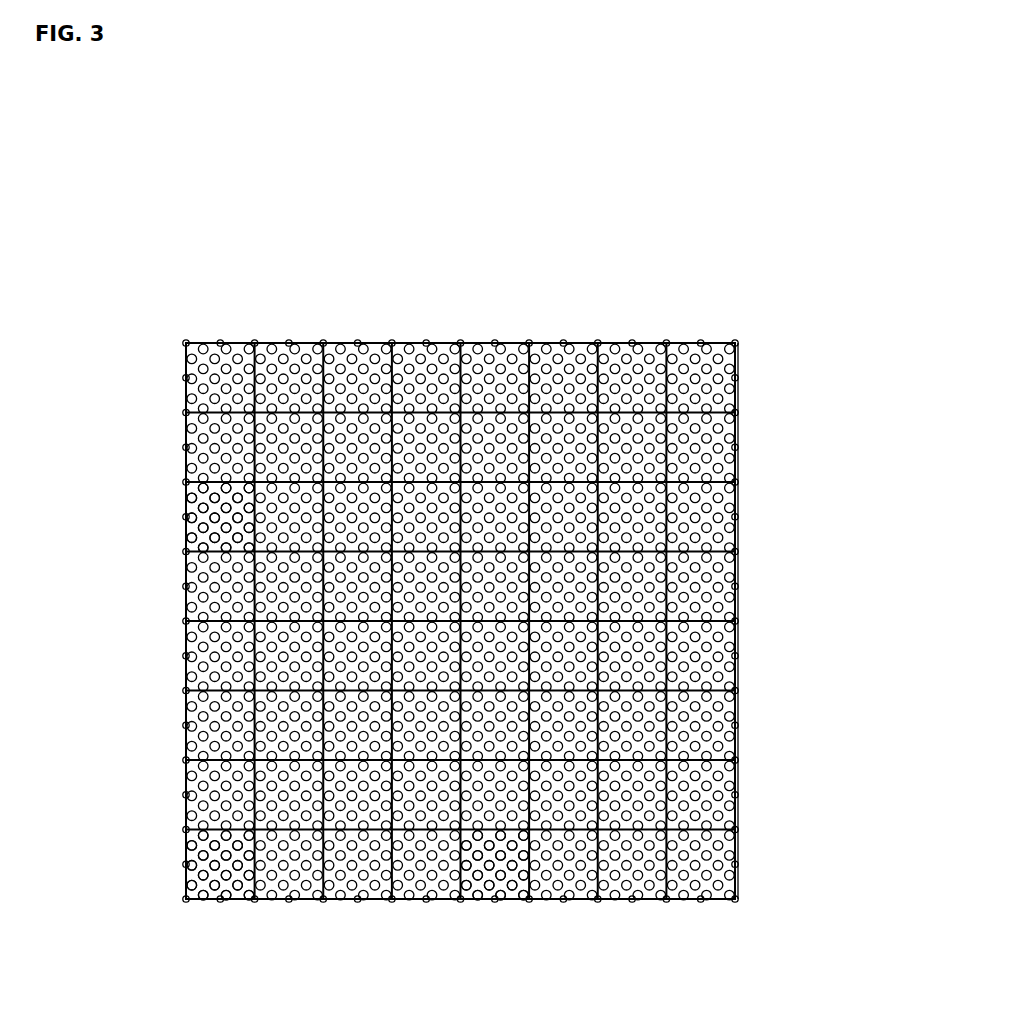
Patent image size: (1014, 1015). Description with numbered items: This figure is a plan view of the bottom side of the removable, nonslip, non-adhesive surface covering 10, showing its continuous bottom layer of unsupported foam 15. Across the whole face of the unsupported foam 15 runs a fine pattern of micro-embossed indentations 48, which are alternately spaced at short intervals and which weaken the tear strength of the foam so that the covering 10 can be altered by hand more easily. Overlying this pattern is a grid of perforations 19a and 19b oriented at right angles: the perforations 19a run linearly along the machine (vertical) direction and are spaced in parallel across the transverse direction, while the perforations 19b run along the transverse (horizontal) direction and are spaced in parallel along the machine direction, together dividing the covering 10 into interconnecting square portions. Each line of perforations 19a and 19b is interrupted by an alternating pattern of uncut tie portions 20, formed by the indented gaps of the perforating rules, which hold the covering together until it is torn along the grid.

The surface covering 10 is at (724, 242).
The unsupported foam layer 15 is at (728, 745).
The perforations 19a is at (375, 337).
The perforations 19b is at (712, 412).
The uncut tie portions 20 is at (252, 337).
The micro-embossed indentations 48 is at (188, 466).